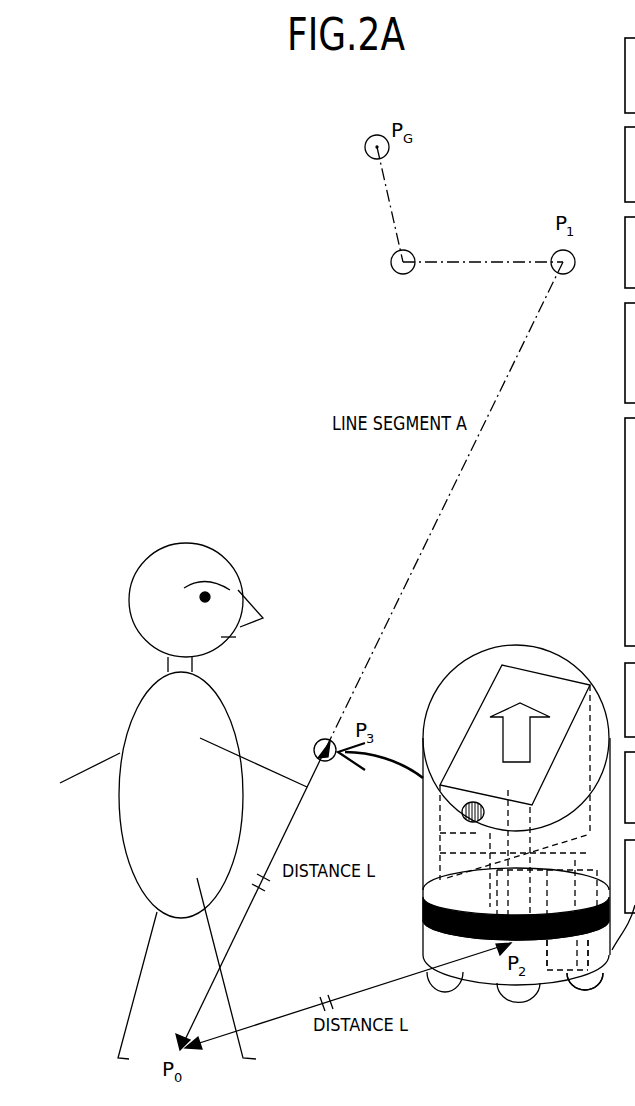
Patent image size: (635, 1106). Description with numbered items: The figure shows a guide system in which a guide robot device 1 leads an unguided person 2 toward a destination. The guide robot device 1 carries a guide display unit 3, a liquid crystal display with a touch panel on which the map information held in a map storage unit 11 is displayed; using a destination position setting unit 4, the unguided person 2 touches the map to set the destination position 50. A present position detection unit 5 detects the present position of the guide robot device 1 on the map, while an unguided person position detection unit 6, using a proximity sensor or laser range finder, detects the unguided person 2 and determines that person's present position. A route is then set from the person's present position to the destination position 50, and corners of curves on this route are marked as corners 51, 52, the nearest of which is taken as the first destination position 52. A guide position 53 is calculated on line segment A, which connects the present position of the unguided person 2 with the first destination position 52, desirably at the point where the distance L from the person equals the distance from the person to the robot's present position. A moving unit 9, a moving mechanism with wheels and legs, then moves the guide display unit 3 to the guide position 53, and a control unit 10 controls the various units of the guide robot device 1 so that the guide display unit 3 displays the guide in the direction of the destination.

The guide robot device 1 is at (423, 812).
The unguided person 2 is at (186, 543).
The guide display unit 3 is at (493, 680).
The destination position setting unit 4 is at (470, 822).
The present position detection unit 5 is at (590, 954).
The unguided person position detection unit 6 is at (425, 902).
The moving unit 9 is at (583, 972).
The control unit 10 is at (558, 938).
The map storage unit 11 is at (437, 935).
The destination position PG 50 is at (366, 140).
The corner of curve on the set route 51 is at (393, 256).
The first destination position P1 52 is at (553, 254).
The guide position P3 53 is at (321, 742).